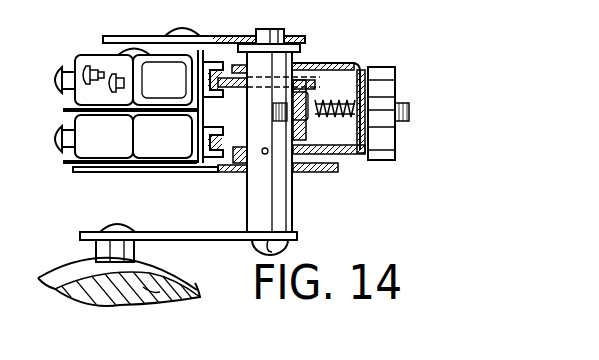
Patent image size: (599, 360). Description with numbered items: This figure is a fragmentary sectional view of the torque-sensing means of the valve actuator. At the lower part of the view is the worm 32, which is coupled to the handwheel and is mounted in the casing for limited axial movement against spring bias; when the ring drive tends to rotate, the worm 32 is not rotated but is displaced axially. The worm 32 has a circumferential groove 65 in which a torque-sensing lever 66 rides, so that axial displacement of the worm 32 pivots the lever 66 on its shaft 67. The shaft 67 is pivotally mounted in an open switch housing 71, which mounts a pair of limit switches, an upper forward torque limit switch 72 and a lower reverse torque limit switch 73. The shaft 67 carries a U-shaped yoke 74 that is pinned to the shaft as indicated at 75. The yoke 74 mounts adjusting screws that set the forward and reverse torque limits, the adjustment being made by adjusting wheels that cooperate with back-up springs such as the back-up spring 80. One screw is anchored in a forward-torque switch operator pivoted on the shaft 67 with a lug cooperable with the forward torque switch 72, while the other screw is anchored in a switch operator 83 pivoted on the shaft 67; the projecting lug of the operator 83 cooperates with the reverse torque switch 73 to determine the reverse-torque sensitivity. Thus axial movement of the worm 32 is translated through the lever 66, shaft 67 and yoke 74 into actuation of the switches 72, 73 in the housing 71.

The switch housing 71 is at (112, 36).
The forward torque limit switch 72 is at (80, 78).
The reverse torque limit switch 73 is at (88, 129).
The shaft 67 is at (262, 30).
The back-up spring 80 is at (332, 97).
The U-shaped yoke 74 is at (348, 153).
The pin 75 is at (267, 154).
The switch operator 83 is at (223, 172).
The torque-sensing lever 66 is at (160, 232).
The circumferential groove 65 is at (58, 268).
The worm 32 is at (175, 297).